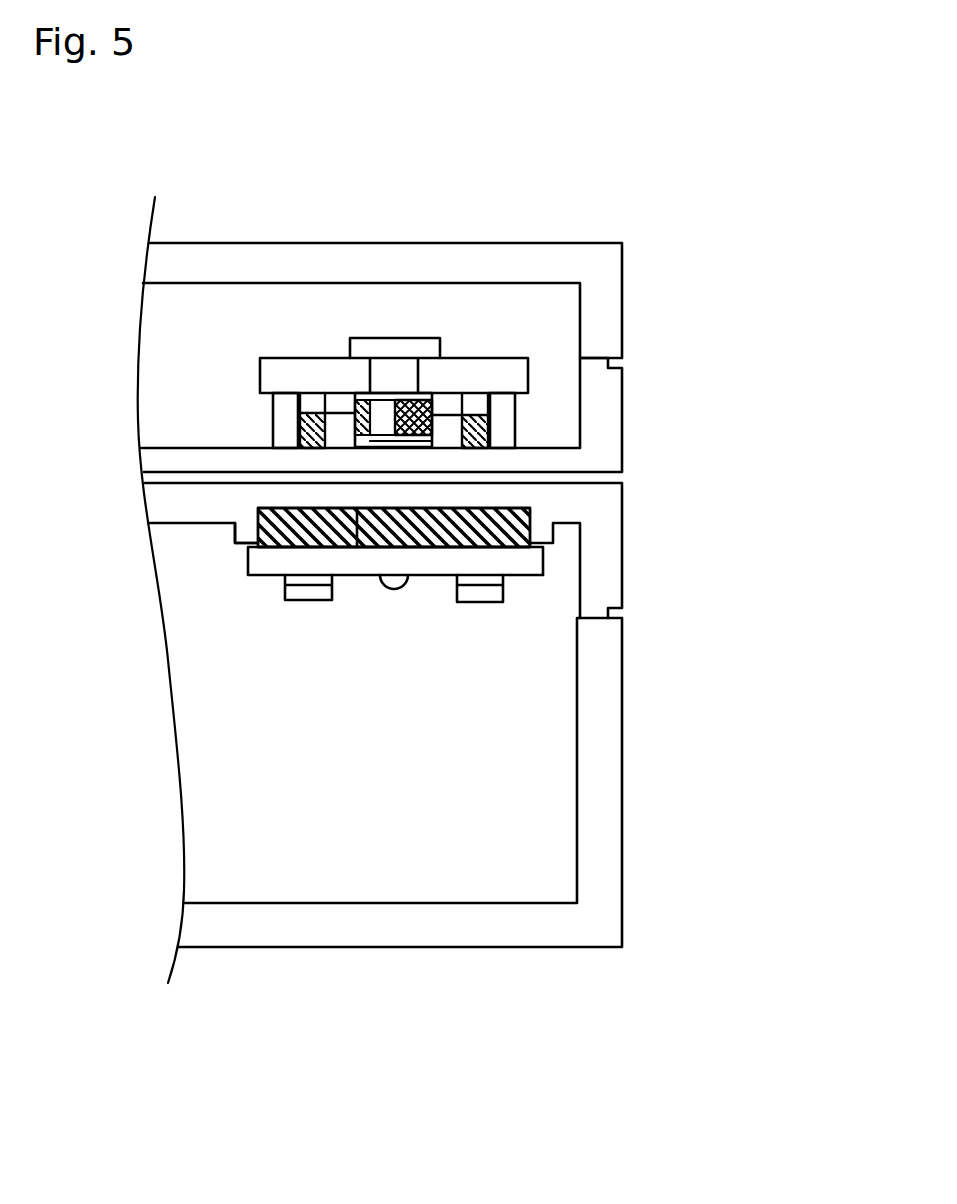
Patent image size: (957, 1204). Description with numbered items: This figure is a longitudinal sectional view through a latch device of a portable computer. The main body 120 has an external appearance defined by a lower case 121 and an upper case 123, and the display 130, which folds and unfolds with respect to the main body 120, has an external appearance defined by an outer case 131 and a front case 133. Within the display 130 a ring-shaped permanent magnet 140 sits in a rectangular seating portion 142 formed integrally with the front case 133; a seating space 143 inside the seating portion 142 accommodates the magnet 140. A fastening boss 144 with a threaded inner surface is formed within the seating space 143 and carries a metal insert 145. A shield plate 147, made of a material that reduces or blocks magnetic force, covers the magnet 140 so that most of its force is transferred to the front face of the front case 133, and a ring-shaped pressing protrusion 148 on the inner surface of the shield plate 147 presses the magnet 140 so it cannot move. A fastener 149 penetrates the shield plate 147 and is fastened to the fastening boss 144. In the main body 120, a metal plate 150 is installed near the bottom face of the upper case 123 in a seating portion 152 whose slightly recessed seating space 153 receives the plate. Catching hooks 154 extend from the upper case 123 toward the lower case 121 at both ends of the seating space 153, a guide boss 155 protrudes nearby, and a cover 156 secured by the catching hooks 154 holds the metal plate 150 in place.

The main body 120 is at (798, 597).
The lower case 121 is at (608, 662).
The upper case 123 is at (608, 587).
The display 130 is at (793, 295).
The outer case 131 is at (603, 295).
The front case 133 is at (608, 398).
The magnet 140 is at (517, 437).
The seating portion 142 is at (283, 420).
The seating space 143 is at (320, 410).
The fastening boss 144 is at (440, 400).
The metal insert 145 is at (361, 400).
The shield plate 147 is at (503, 372).
The pressing protrusion 148 is at (477, 405).
The fastener 149 is at (400, 338).
The metal plate 150 is at (580, 523).
The seating portion 152 is at (242, 539).
The seating space 153 is at (360, 547).
The catching hook 154 is at (312, 600).
The guide boss 155 is at (395, 595).
The cover 156 is at (522, 575).